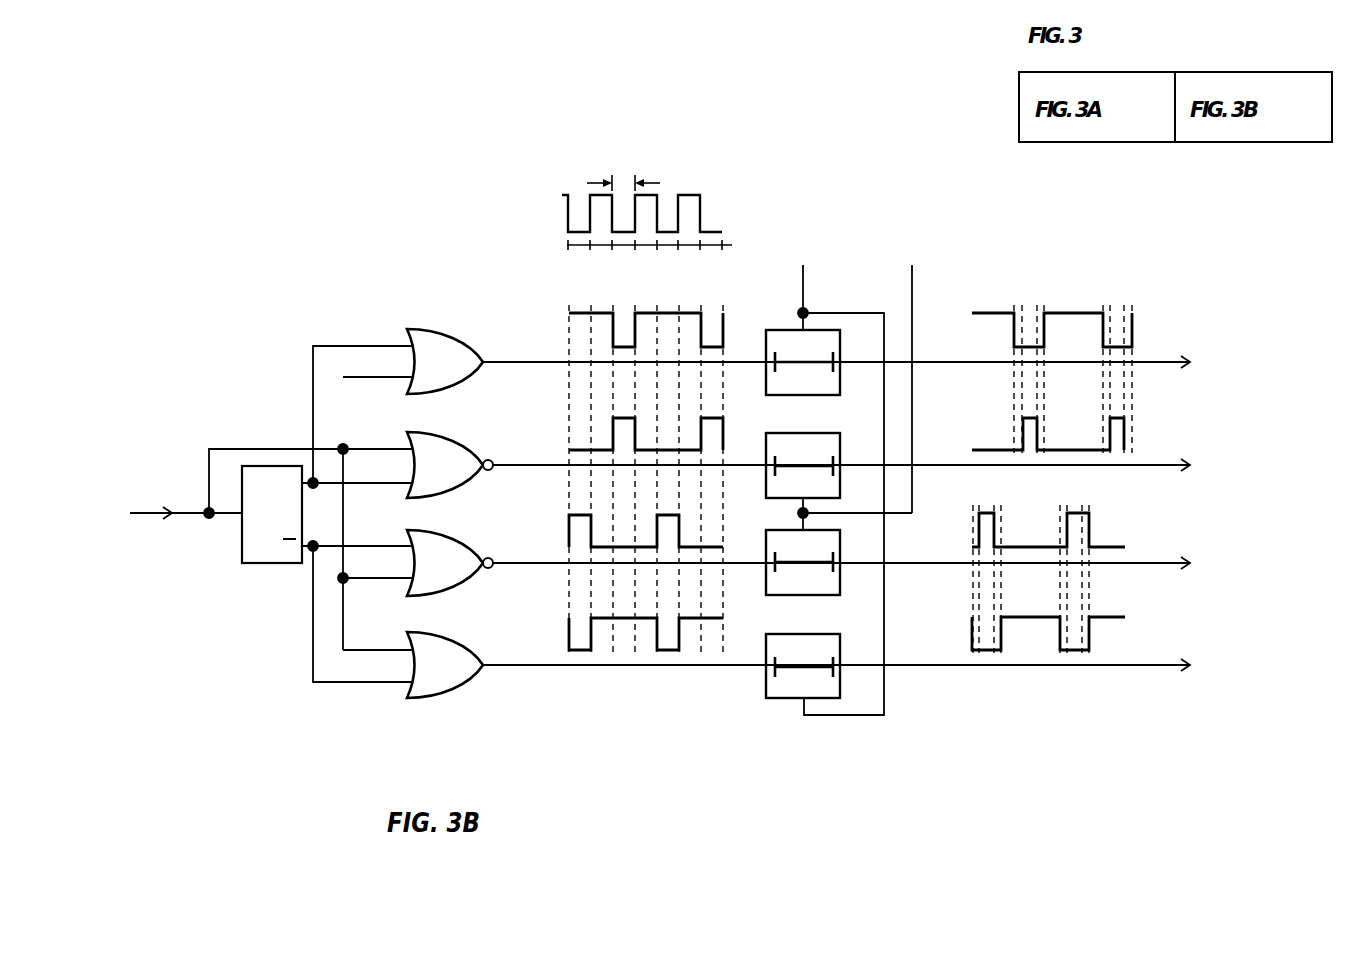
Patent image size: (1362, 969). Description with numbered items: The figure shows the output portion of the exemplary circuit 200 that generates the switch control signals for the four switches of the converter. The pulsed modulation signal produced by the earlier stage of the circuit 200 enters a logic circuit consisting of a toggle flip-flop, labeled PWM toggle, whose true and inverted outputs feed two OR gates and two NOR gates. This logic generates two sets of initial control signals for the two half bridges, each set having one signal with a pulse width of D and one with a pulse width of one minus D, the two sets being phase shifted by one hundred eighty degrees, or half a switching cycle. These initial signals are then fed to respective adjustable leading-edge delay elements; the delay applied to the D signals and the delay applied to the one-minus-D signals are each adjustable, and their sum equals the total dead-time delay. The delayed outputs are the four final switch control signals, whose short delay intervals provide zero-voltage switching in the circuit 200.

The circuit 200 is at (550, 228).